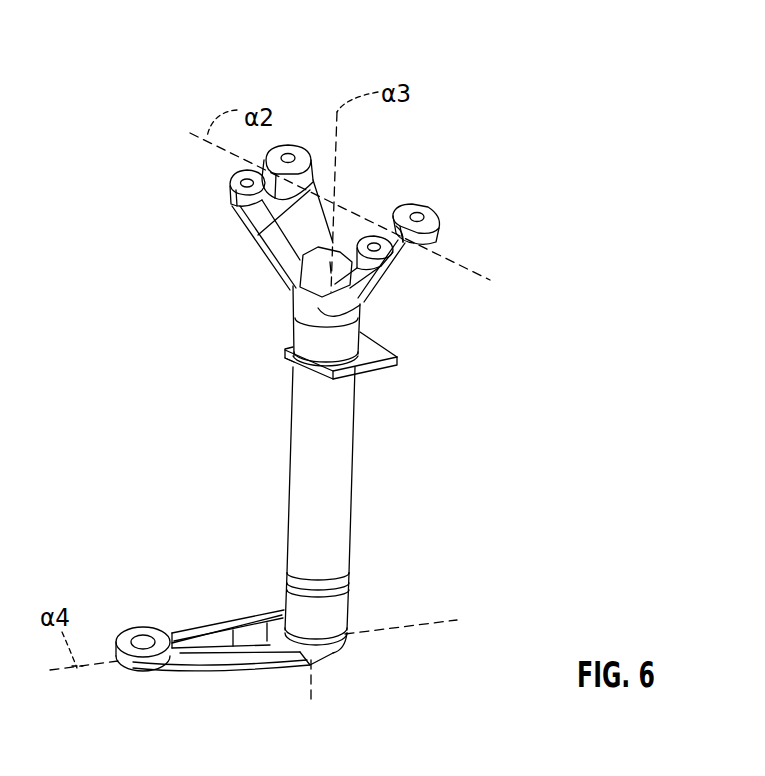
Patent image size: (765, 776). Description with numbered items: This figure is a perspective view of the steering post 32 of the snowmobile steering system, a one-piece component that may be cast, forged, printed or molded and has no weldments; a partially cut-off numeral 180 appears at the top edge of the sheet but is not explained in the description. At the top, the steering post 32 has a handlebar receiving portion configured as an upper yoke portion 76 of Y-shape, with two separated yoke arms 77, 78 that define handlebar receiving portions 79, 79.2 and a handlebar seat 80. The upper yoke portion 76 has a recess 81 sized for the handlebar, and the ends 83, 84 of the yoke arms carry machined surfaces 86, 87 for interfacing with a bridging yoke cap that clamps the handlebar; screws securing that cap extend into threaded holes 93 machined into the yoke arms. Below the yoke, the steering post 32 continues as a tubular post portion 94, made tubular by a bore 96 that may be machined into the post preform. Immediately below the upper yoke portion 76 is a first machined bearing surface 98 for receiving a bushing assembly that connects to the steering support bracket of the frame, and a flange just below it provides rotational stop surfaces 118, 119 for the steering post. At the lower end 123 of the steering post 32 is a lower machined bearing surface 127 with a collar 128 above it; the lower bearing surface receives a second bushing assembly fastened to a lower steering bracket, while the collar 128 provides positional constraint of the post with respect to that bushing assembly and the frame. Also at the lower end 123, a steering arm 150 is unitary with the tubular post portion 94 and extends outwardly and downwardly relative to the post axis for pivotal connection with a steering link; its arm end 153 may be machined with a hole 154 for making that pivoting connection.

The drive system 180 is at (119, 6).
The handlebar receiving portion 79 is at (285, 146).
The threaded holes 93 is at (289, 148).
The machined surface 86 is at (241, 178).
The end of yoke arm 83 is at (238, 207).
The yoke arm 77 is at (250, 212).
The upper yoke portion 76 is at (292, 252).
The handlebar receiving portion 79.2 is at (433, 213).
The machined surface 87 is at (423, 207).
The end of yoke arm 84 is at (437, 231).
The handlebar seat 80 is at (425, 140).
The recess 81 is at (395, 222).
The yoke arm 78 is at (397, 247).
The bore 96 is at (313, 277).
The tubular post portion 94 is at (310, 353).
The rotational stop surface 119 is at (290, 335).
The first machined bearing surface 98 is at (343, 350).
The rotational stop surface 118 is at (397, 355).
The steering post 32 is at (300, 512).
The collar 128 is at (348, 574).
The lower machined bearing surface 127 is at (333, 607).
The lower end 123 is at (330, 628).
The steering arm 150 is at (220, 623).
The arm end 153 is at (127, 642).
The hole 154 is at (146, 639).